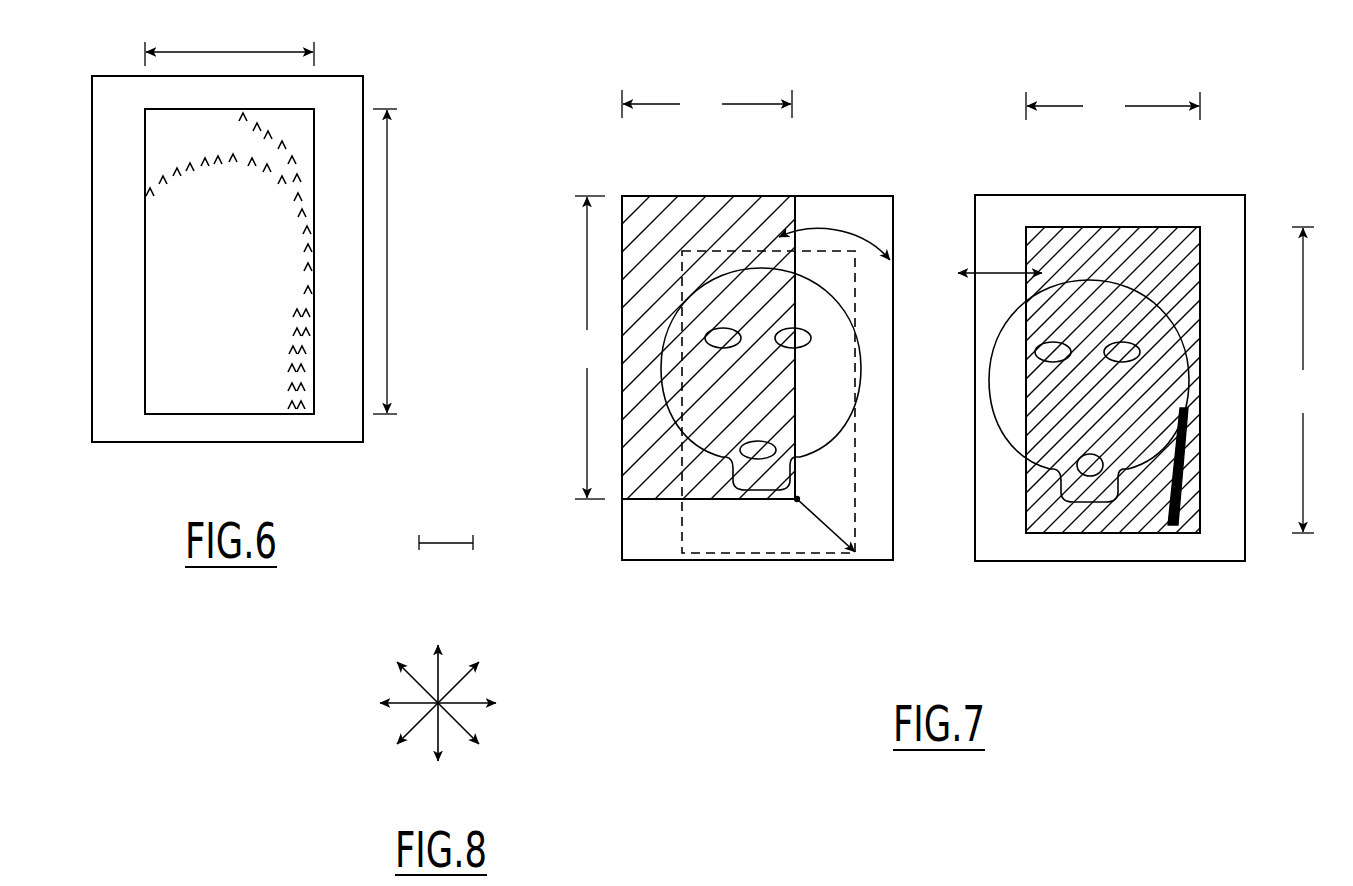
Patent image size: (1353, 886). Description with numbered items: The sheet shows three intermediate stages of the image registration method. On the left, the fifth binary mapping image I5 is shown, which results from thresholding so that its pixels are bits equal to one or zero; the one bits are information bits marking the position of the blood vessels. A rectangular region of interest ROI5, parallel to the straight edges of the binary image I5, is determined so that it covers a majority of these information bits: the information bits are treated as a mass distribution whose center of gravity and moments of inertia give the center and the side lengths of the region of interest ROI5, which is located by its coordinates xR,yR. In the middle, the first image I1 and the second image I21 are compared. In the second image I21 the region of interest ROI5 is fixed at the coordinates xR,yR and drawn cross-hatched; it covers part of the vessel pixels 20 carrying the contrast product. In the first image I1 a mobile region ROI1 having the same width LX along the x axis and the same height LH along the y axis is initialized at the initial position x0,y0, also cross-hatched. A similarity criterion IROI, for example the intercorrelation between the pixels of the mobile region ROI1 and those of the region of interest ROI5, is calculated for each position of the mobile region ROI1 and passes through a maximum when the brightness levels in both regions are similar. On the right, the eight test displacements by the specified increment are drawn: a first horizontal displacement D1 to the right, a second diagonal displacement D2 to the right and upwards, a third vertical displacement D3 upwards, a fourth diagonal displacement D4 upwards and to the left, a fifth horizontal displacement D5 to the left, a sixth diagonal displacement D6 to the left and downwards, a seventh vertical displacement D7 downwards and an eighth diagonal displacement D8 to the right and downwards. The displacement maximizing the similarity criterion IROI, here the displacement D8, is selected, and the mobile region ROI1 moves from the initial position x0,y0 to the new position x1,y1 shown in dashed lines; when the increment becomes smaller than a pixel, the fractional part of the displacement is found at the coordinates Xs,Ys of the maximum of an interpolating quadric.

In FIG. 7, the blood vessel network 20 is at (1160, 524).
In FIG. 7, the first image I1 is at (682, 550).
In FIG. 6, the fifth binary mapping image I5 is at (118, 335).
In FIG. 7, the second image I21 is at (1008, 548).
In FIG. 7, the mobile region ROI1 is at (660, 218).
In FIG. 6, the region of interest ROI5 is at (145, 258).
In FIG. 7, the region of interest ROI5 is at (1025, 240).
In FIG. 7, the similarity criterion IROI is at (910, 256).
In FIG. 6, the width LX is at (218, 52).
In FIG. 7, the width LX is at (911, 105).
In FIG. 6, the height LH is at (390, 276).
In FIG. 7, the height LH is at (942, 364).
In FIG. 6, the coordinates of the region of interest xR,yR is at (212, 415).
In FIG. 7, the coordinates of the region of interest xR,yR is at (1203, 262).
In FIG. 7, the initial position x0,y0 is at (725, 500).
In FIG. 7, the new position x1,y1 is at (823, 555).
In FIG. 7, the coordinates of the quadric maximum Xs,Ys is at (858, 551).
In FIG. 8, the first horizontal displacement D1 is at (484, 703).
In FIG. 8, the second diagonal displacement D2 is at (484, 664).
In FIG. 8, the third vertical displacement D3 is at (442, 654).
In FIG. 8, the fourth diagonal displacement D4 is at (392, 661).
In FIG. 8, the fifth horizontal displacement D5 is at (391, 703).
In FIG. 8, the sixth diagonal displacement D6 is at (392, 741).
In FIG. 8, the seventh vertical displacement D7 is at (442, 748).
In FIG. 7, the eighth diagonal displacement D8 is at (822, 518).
In FIG. 8, the eighth diagonal displacement D8 is at (485, 745).